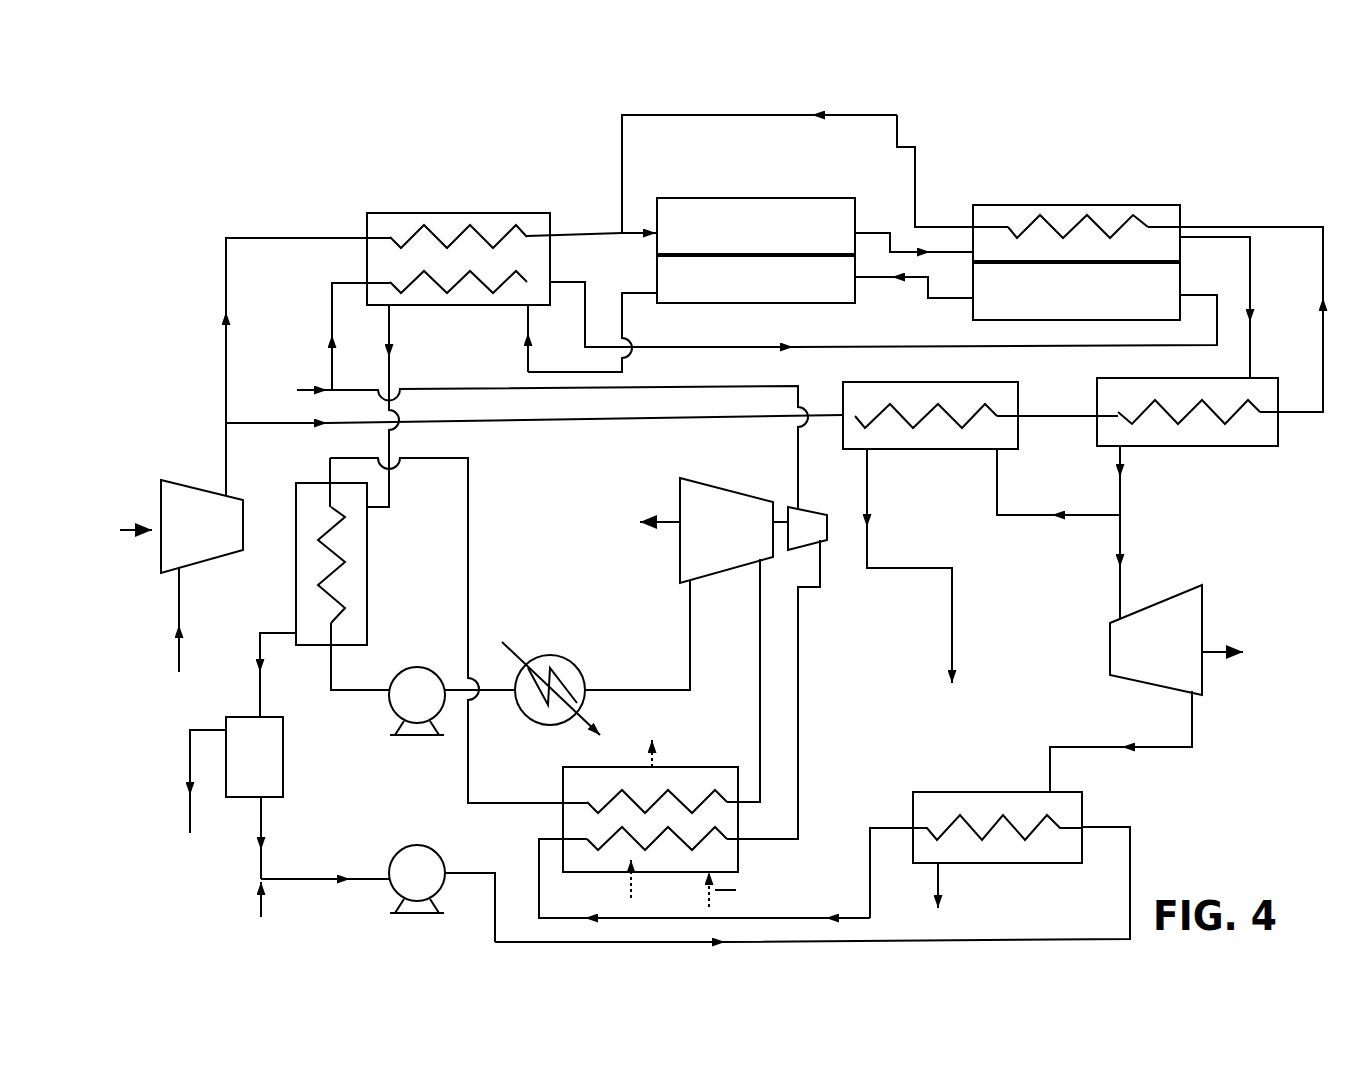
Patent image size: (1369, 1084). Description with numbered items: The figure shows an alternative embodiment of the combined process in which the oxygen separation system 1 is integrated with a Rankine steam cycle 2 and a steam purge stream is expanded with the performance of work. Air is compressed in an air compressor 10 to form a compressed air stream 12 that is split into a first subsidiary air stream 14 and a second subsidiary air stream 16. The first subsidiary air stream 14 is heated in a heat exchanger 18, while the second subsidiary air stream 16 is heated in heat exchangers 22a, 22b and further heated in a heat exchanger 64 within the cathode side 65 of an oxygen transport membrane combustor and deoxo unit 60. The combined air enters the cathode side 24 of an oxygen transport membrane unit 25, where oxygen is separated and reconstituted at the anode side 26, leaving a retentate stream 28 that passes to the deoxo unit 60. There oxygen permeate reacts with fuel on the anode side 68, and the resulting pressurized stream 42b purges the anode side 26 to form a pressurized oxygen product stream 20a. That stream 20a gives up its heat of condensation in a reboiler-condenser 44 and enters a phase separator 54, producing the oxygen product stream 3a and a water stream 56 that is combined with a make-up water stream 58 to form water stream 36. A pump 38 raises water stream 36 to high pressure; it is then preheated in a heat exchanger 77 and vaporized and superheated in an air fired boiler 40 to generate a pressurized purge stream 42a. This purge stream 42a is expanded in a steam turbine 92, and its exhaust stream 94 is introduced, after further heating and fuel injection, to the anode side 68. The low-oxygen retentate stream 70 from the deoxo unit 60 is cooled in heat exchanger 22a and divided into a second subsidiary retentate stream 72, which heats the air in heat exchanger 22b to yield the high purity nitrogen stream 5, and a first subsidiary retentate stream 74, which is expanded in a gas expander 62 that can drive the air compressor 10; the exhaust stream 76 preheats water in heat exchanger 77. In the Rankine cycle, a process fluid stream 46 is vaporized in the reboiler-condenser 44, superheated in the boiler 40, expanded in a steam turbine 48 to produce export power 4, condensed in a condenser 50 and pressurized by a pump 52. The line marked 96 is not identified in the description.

The oxygen separation system 1 is at (543, 163).
The Rankine steam cycle 2 is at (508, 512).
The oxygen product stream 3a is at (190, 812).
The export power 4 is at (643, 537).
The high purity nitrogen stream 5 is at (952, 640).
The air compressor 10 is at (175, 558).
The compressed air stream 12 is at (225, 455).
The first subsidiary air stream 14 is at (225, 398).
The second subsidiary air stream 16 is at (273, 428).
The heat exchanger 18 is at (458, 213).
The pressurized oxygen product stream 20a is at (527, 352).
The heat exchanger 22a is at (1240, 446).
The heat exchanger 22b is at (932, 449).
The cathode side 24 is at (764, 239).
The oxygen transport membrane unit 25 is at (795, 188).
The anode side 26 is at (764, 289).
The retentate stream 28 is at (872, 225).
The water stream 36 is at (320, 885).
The pump 38 is at (418, 858).
The air fired boiler 40 is at (570, 787).
The pressurized purge stream 42a is at (803, 718).
The pressurized stream 42b is at (928, 300).
The reboiler-condenser 44 is at (368, 577).
The process fluid stream 46 is at (470, 616).
The steam turbine 48 is at (738, 512).
The condenser 50 is at (573, 668).
The pump 52 is at (403, 692).
The phase separator 54 is at (243, 780).
The water stream 56 is at (265, 862).
The make-up water stream 58 is at (258, 882).
The oxygen transport membrane combustor and deoxo unit 60 is at (1188, 204).
The gas expander 62 is at (1133, 665).
The heat exchanger 64 is at (1078, 236).
The cathode side 65 is at (1100, 256).
The anode side 68 is at (1074, 296).
The retentate stream 70 is at (1252, 288).
The second subsidiary retentate stream 72 is at (1073, 515).
The first subsidiary retentate stream 74 is at (1122, 548).
The exhaust stream 76 is at (1048, 762).
The heat exchanger 77 is at (1044, 846).
The steam turbine 92 is at (825, 530).
The exhaust stream 94 is at (695, 382).
The fuel line to heat exchanger 96 is at (332, 307).